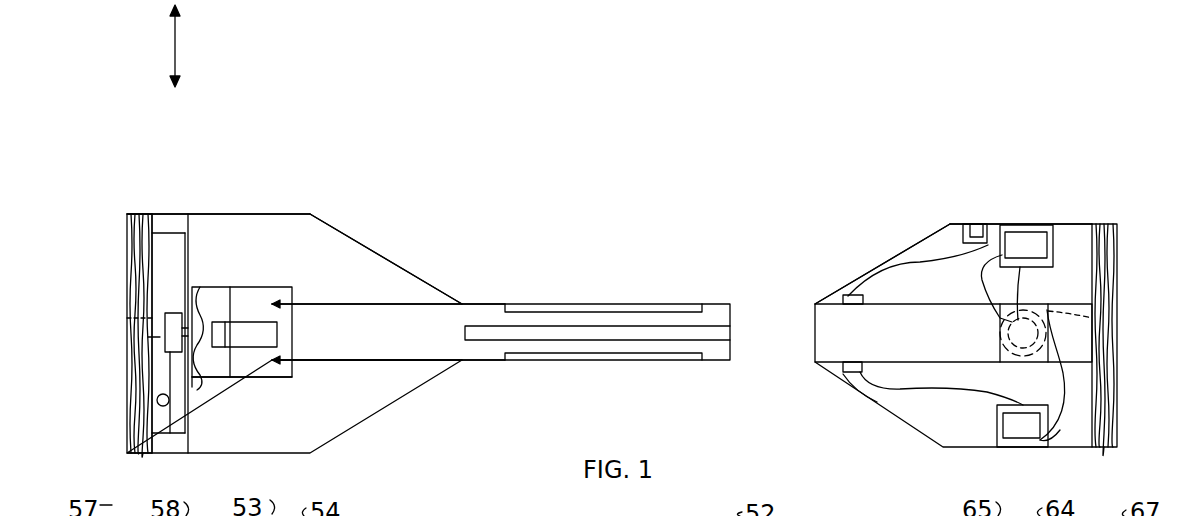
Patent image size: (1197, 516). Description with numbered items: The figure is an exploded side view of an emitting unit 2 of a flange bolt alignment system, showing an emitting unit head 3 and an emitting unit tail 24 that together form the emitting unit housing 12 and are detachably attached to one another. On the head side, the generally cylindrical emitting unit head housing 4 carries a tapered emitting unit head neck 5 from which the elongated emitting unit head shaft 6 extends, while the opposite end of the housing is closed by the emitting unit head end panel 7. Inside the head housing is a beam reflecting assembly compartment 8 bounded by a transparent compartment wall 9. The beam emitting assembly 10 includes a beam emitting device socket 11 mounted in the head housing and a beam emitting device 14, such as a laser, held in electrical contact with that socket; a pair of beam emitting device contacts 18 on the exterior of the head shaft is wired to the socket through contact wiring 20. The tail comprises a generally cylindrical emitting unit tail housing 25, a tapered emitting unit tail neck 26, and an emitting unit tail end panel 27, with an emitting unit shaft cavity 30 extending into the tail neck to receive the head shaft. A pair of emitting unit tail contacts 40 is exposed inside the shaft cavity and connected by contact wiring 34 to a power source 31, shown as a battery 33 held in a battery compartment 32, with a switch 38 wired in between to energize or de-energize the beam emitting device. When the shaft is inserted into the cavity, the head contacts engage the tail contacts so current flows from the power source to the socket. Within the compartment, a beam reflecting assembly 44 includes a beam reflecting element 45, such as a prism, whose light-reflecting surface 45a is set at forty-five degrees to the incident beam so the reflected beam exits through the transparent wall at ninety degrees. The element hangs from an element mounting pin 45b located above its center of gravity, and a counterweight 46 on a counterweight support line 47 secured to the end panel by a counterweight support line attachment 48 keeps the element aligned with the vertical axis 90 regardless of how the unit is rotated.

The emitting unit 2 is at (790, 150).
The emitting unit head 3 is at (232, 205).
The emitting unit head housing 4 is at (289, 213).
The emitting unit head neck 5 is at (388, 258).
The emitting unit head shaft 6 is at (712, 302).
The emitting unit head end panel 7 is at (125, 238).
The beam reflecting assembly compartment 8 is at (180, 247).
The transparent compartment wall 9 is at (182, 220).
The beam emitting assembly 10 is at (260, 273).
The beam emitting device socket 11 is at (260, 370).
The emitting unit housing 12 is at (503, 272).
The beam emitting device 14 is at (262, 334).
The beam emitting device contacts 18 is at (613, 360).
The contact wiring 20 is at (383, 358).
The emitting unit tail 24 is at (1071, 214).
The emitting unit tail housing 25 is at (996, 227).
The emitting unit tail neck 26 is at (880, 263).
The emitting unit tail end panel 27 is at (1118, 247).
The emitting unit shaft cavity 30 is at (822, 305).
The power source 31 is at (1074, 428).
The battery compartment 32 is at (1053, 250).
The battery 33 is at (982, 258).
The contact wiring 34 is at (913, 262).
The switch 38 is at (975, 224).
The emitting unit tail contacts 40 is at (843, 295).
The beam reflecting assembly 44 is at (157, 300).
The beam reflecting element 45 is at (175, 302).
The light-reflecting surface 45a is at (193, 377).
The element mounting pin 45b is at (221, 327).
The counterweight 46 is at (170, 398).
The counterweight support line 47 is at (168, 376).
The counterweight support line attachment 48 is at (127, 318).
The vertical axis 90 is at (175, 52).